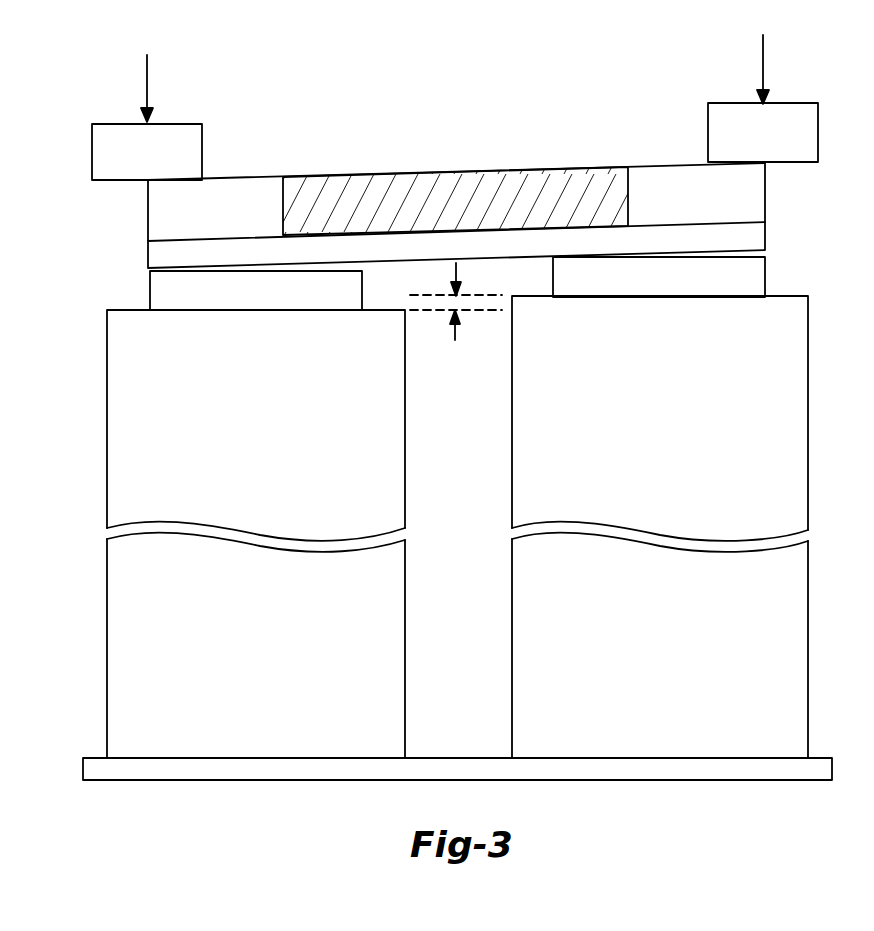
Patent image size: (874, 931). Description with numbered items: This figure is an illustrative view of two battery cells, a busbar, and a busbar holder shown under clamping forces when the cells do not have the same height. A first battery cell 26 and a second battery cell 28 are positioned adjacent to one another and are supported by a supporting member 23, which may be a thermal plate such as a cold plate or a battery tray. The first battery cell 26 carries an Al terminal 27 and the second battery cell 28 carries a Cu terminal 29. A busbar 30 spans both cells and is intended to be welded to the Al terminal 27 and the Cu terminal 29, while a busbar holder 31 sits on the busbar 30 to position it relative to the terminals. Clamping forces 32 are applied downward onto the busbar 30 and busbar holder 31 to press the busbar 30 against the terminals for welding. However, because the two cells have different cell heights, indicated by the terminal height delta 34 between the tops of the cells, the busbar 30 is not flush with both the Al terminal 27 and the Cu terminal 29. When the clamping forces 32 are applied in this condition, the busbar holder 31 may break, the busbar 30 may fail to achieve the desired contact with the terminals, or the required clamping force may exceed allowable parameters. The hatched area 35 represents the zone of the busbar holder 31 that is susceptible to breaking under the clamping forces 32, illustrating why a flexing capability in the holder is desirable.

The supporting member 23 is at (98, 770).
The first battery cell 26 is at (126, 380).
The Al terminal 27 is at (162, 292).
The second battery cell 28 is at (780, 357).
The Cu terminal 29 is at (755, 279).
The busbar 30 is at (752, 233).
The busbar holder 31 is at (162, 216).
The clamping force 32 is at (147, 81).
The terminal height delta 34 is at (455, 335).
The area 35 is at (347, 182).